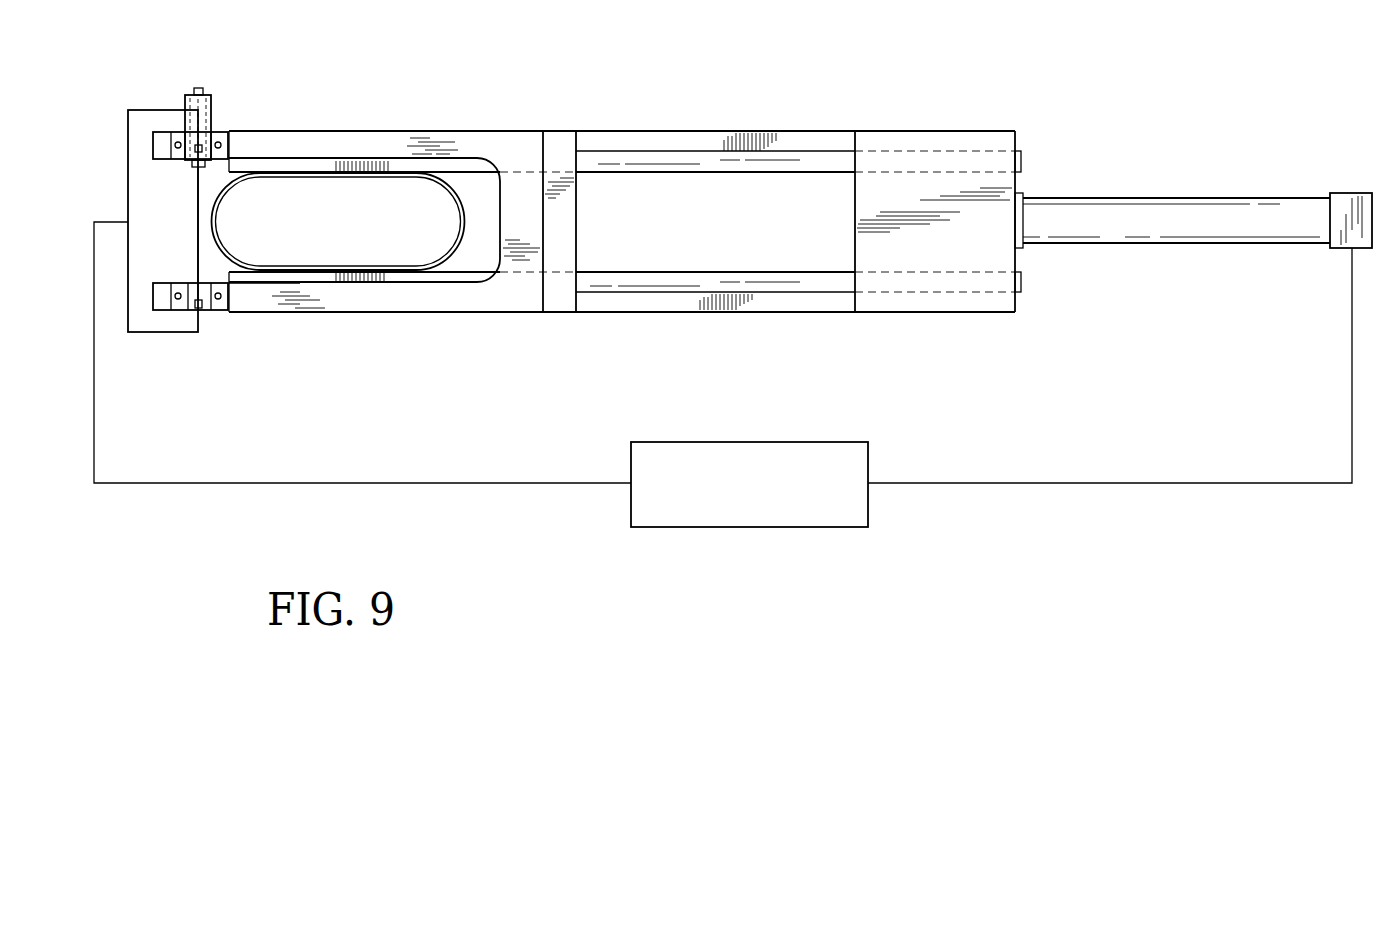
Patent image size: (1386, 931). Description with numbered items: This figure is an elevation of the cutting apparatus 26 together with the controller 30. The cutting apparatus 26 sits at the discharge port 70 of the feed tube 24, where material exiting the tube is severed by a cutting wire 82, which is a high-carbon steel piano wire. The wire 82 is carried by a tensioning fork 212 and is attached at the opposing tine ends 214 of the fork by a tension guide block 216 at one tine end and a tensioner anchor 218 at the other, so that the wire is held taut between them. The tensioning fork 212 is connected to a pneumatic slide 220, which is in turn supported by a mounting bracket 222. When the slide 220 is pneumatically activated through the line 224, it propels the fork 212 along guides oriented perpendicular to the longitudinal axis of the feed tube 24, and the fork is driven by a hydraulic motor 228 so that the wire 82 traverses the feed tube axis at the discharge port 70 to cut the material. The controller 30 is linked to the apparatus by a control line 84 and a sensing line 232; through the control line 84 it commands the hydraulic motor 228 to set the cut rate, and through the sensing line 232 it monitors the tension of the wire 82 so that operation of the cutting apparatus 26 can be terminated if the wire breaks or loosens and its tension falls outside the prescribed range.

The feed tube 24 is at (457, 192).
The cutting apparatus 26 is at (838, 332).
The controller 30 is at (748, 527).
The discharge port 70 is at (358, 200).
The cutting wire 82 is at (195, 205).
The control line 84 is at (1352, 376).
The tensioning fork 212 is at (365, 313).
The tine ends 214 is at (160, 132).
The tension guide block 216 is at (213, 108).
The tensioner anchor 218 is at (210, 311).
The pneumatic slide 220 is at (692, 160).
The mounting bracket 222 is at (620, 131).
The line 224 is at (1182, 198).
The hydraulic motor 228 is at (927, 131).
The sensing line 232 is at (94, 443).